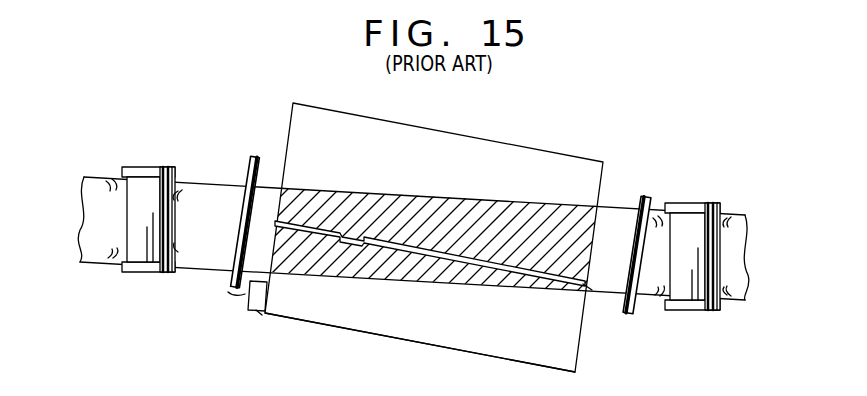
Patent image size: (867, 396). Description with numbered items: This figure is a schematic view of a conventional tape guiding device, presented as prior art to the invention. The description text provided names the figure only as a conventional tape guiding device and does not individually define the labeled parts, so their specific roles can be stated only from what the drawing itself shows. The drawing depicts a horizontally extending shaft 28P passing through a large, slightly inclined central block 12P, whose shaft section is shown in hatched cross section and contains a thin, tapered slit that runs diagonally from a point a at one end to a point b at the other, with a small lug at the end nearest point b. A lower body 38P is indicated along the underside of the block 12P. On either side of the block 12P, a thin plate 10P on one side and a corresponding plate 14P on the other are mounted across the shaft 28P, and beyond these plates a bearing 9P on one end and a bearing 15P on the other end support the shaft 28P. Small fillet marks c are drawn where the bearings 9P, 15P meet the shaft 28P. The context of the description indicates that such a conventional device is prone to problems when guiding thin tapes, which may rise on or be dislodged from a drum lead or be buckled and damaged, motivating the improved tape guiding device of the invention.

The bearing 9P is at (147, 167).
The plate 10P is at (257, 156).
The shaft 28P is at (206, 177).
The hub block 12P is at (493, 142).
The plate 14P is at (644, 195).
The bearing 15P is at (698, 203).
The lower body 38P is at (377, 283).
The wedge end a is at (590, 289).
The wedge end b is at (262, 314).
The fillet c is at (103, 180).